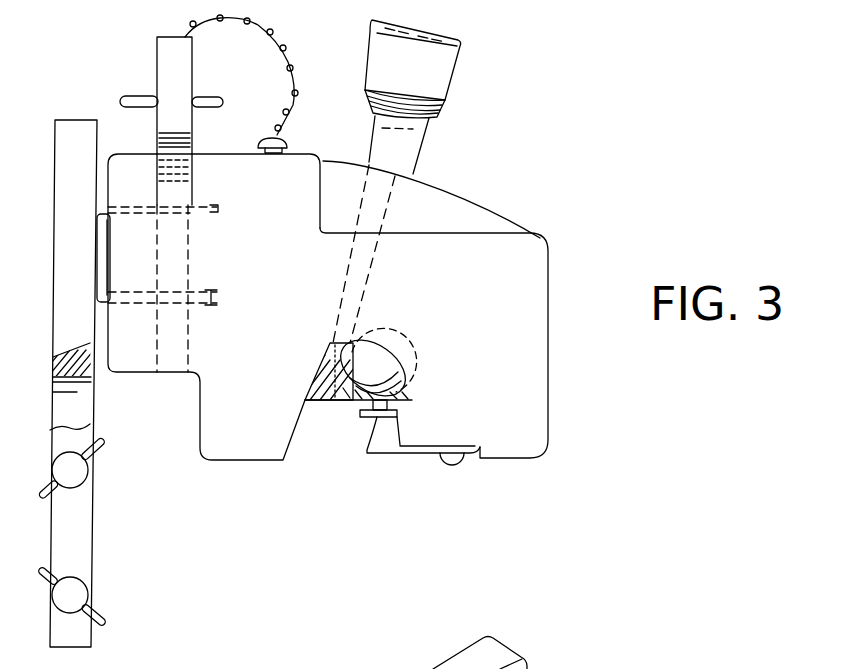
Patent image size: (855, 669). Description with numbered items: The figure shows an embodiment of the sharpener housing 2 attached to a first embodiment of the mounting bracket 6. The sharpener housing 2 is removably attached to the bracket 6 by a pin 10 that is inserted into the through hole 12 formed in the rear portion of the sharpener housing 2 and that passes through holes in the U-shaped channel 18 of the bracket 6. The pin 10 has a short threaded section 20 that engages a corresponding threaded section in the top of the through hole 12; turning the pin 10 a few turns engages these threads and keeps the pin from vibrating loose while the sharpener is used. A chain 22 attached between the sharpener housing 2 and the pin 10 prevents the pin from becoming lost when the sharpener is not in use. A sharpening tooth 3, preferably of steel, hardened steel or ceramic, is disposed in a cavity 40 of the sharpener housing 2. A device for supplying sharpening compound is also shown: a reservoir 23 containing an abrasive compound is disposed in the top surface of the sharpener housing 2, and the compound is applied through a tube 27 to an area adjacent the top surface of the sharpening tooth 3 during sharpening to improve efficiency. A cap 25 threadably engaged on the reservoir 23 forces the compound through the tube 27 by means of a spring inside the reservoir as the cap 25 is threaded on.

The sharpener housing 2 is at (578, 186).
The sharpening tooth 3 is at (378, 408).
The bracket 6 is at (44, 124).
The pin 10 is at (165, 62).
The through hole 12 is at (160, 243).
The U-shaped channel 18 is at (97, 272).
The threaded section 20 is at (197, 140).
The chain 22 is at (289, 50).
The reservoir 23 is at (403, 143).
The cap 25 is at (432, 75).
The tube 27 is at (362, 265).
The cavity 40 is at (313, 427).